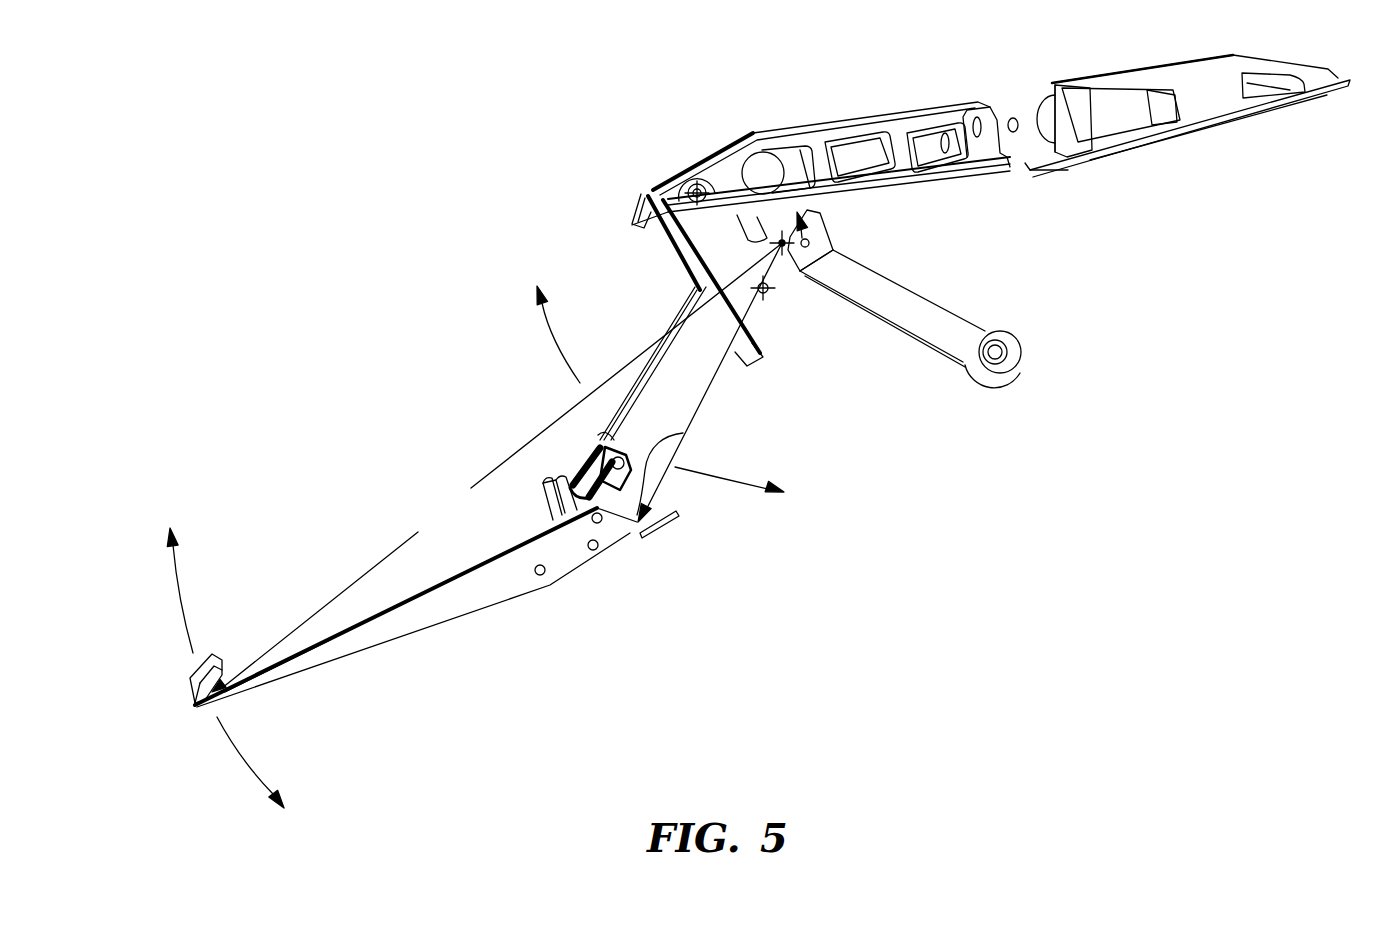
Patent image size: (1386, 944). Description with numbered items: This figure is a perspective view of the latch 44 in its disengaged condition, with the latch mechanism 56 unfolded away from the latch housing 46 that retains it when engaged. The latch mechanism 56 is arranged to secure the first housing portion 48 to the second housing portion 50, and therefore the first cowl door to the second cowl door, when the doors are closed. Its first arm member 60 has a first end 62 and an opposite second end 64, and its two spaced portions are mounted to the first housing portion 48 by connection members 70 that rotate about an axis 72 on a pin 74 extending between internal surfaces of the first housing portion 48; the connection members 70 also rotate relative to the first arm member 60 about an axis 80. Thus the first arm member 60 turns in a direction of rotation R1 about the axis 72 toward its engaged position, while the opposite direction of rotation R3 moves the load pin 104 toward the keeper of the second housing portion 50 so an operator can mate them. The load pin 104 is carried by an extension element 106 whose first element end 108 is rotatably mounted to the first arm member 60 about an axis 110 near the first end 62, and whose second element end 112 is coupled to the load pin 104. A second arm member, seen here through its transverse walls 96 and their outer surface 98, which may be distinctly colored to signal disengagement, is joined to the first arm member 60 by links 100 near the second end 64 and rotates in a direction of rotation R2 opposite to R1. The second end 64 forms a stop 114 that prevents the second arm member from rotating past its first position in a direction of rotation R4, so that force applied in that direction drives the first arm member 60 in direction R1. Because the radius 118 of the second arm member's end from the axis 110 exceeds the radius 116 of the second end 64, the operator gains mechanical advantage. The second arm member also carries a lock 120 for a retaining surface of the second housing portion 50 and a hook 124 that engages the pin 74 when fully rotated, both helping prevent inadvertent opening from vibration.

The latch 44 is at (420, 256).
The latch housing 46 is at (1246, 212).
The first housing portion 48 is at (804, 132).
The second housing portion 50 is at (1290, 106).
The latch mechanism 56 is at (606, 680).
The first arm member 60 is at (735, 368).
The first end 62 is at (807, 219).
The second end 64 is at (687, 537).
The connection member 70 is at (717, 258).
The axis 72 is at (770, 294).
The pin 74 is at (690, 180).
The axis 80 is at (653, 190).
The transverse walls 96 is at (480, 582).
The outer surface 98 is at (445, 624).
The links 100 is at (613, 492).
The load pin 104 is at (1003, 352).
The extension element 106 is at (940, 300).
The first element end 108 is at (806, 300).
The axis 110 is at (781, 240).
The second element end 112 is at (1017, 380).
The stop 114 is at (655, 528).
The radius 116 is at (496, 468).
The radius 118 is at (683, 433).
The lock 120 is at (548, 552).
The hook 124 is at (185, 688).
The direction of rotation R1 is at (729, 471).
The direction of rotation R2 is at (190, 590).
The direction of rotation R3 is at (563, 334).
The direction of rotation R4 is at (250, 762).